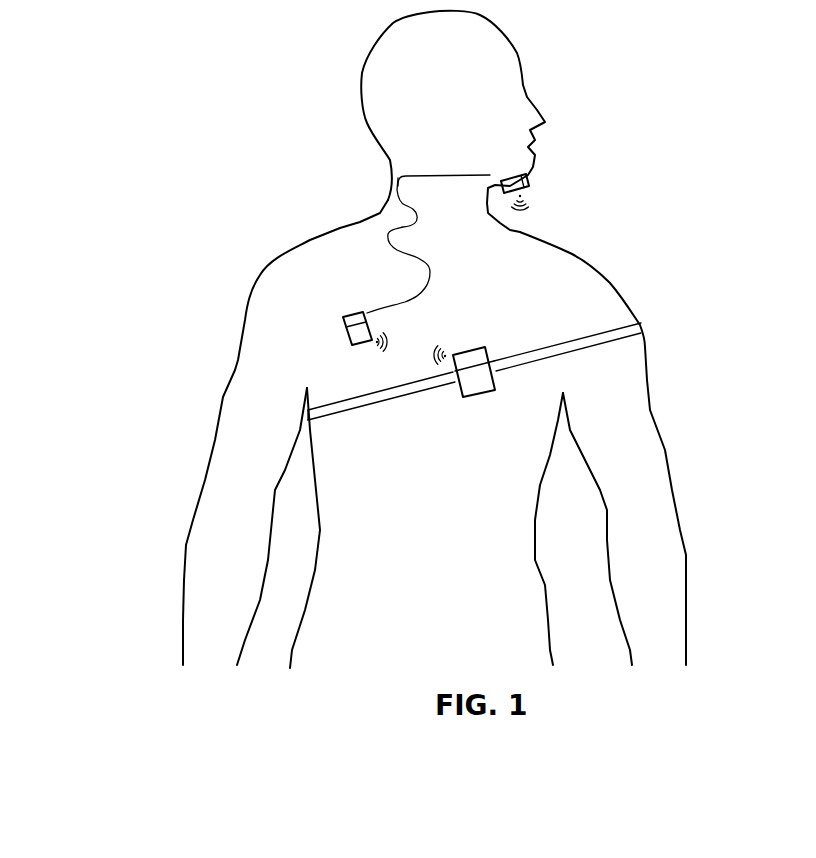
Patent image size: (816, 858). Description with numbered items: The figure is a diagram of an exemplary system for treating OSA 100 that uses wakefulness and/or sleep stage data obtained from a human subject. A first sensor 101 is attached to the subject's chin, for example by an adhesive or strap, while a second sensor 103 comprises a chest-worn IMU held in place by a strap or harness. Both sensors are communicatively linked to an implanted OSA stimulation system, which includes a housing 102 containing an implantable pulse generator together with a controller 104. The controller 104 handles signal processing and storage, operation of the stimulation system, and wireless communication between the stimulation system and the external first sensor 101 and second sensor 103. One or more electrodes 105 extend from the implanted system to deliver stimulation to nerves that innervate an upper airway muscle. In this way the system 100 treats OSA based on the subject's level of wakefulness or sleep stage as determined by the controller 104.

The system for treating OSA 100 is at (280, 102).
The first sensor 101 is at (537, 188).
The housing 102 is at (215, 299).
The second sensor 103 is at (500, 379).
The controller 104 is at (330, 318).
The electrodes 105 is at (378, 235).